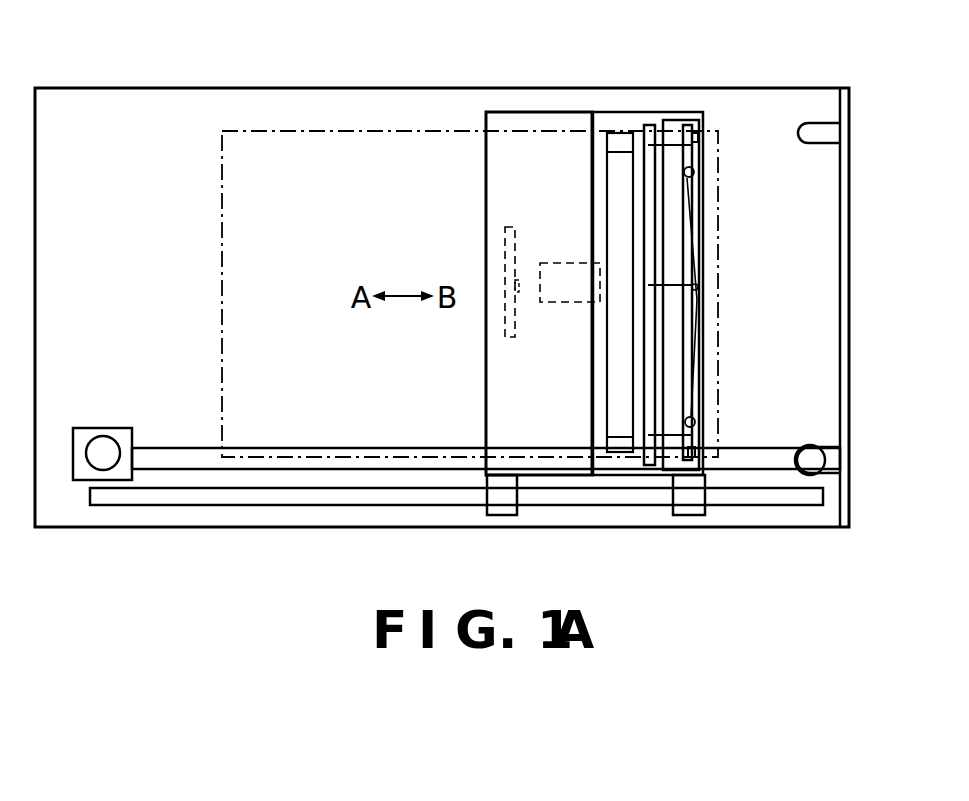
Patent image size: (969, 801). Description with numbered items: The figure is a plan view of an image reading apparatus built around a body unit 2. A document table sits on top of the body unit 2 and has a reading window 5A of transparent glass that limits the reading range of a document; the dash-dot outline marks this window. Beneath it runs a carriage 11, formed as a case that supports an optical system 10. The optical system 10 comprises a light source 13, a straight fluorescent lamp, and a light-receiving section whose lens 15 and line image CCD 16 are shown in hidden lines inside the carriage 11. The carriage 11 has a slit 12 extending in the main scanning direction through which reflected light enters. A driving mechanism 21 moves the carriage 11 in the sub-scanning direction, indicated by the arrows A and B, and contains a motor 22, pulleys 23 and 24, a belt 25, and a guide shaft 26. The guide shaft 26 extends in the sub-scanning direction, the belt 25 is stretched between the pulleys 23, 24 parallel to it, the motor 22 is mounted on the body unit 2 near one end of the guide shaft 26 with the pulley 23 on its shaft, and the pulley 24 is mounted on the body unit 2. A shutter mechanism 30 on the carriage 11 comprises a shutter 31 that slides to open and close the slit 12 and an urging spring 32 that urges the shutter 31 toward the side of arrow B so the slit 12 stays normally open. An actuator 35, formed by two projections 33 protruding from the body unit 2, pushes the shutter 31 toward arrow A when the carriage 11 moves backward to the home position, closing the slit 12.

The body unit 2 is at (851, 284).
The reading window 5A is at (270, 130).
The optical system 10 is at (468, 222).
The carriage 11 is at (497, 163).
The slit 12 is at (650, 128).
The light source 13 is at (616, 405).
The lens 15 is at (572, 262).
The line image CCD 16 is at (514, 263).
The driving mechanism 21 is at (120, 384).
The motor 22 is at (84, 426).
The pulley 23 is at (120, 428).
The pulley 24 is at (810, 445).
The belt 25 is at (280, 447).
The guide shaft 26 is at (301, 506).
The shutter mechanism 30 is at (712, 136).
The shutter 31 is at (690, 208).
The urging spring 32 is at (699, 232).
The projections 33 is at (823, 133).
The actuator 35 is at (822, 106).